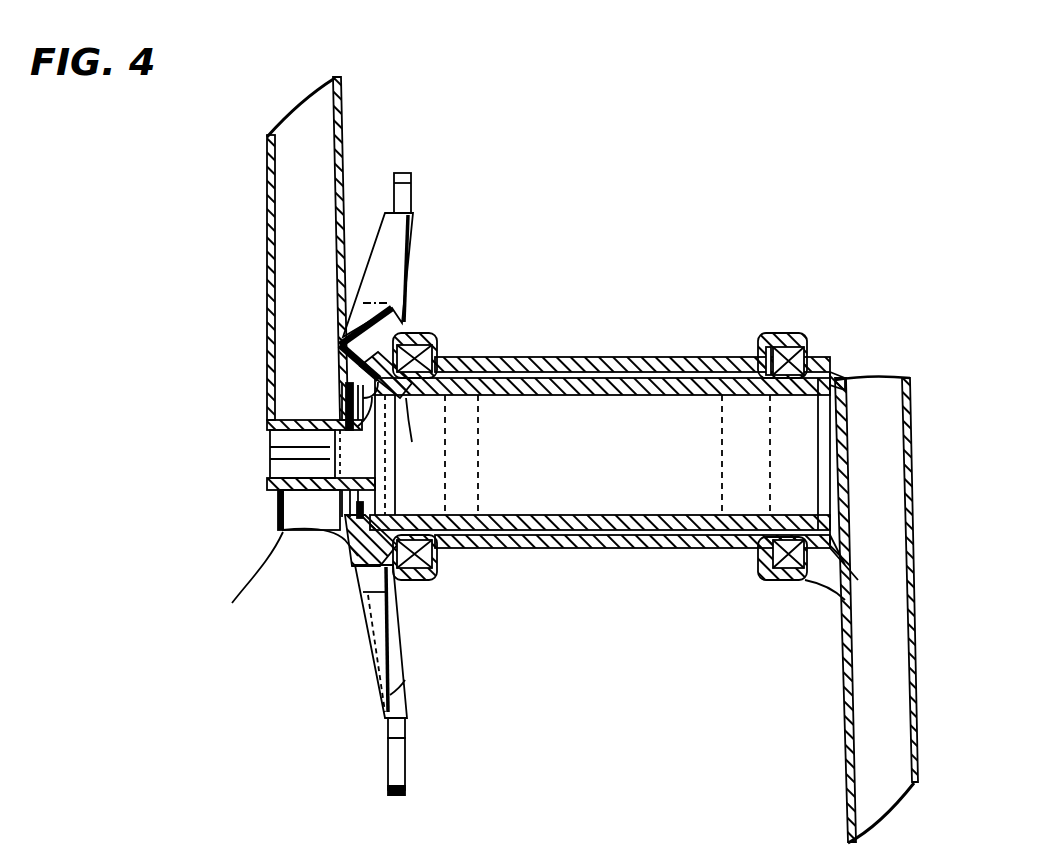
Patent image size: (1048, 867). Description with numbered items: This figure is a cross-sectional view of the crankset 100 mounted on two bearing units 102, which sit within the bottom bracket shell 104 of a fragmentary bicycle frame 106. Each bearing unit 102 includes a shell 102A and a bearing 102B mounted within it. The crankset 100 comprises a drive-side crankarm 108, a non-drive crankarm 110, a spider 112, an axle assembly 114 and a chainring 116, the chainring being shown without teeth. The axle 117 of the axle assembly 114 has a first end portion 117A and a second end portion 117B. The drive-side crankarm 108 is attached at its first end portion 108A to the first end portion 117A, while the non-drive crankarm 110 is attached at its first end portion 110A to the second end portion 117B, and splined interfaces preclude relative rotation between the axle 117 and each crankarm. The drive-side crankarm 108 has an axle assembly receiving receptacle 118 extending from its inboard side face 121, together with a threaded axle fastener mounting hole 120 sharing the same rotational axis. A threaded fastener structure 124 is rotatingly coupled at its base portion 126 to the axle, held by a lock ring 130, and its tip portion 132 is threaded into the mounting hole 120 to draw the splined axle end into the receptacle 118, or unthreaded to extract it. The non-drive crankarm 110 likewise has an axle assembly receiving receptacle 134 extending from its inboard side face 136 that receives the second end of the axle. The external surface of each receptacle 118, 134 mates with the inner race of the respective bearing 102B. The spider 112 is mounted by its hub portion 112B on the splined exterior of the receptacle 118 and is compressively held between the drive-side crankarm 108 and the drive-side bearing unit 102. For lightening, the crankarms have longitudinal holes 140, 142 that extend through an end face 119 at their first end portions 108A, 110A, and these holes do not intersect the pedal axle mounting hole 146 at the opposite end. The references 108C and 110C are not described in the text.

The crankset 100 is at (262, 521).
The bearing unit 102 is at (453, 333).
The shell 102A is at (770, 334).
The bearing 102B is at (808, 375).
The bottom bracket shell 104 is at (628, 358).
The bicycle frame 106 is at (568, 354).
The drive-side crankarm 108 is at (268, 254).
The first end portion of the drive-side crankarm 108A is at (313, 535).
The flange outer edge 108C is at (268, 152).
The non-drive crankarm 110 is at (912, 510).
The first end portion of the non-drive crankarm 110A is at (910, 418).
The second flange lower edge 110C is at (922, 770).
The spider 112 is at (368, 648).
The hub portion of the spider 112B is at (390, 327).
The axle assembly 114 is at (560, 513).
The chainring 116 is at (402, 795).
The axle 117 is at (615, 522).
The first end portion of the axle 117A is at (434, 560).
The second end portion of the axle 117B is at (790, 530).
The axle assembly receiving receptacle 118 is at (418, 455).
The end face 119 is at (903, 325).
The axle fastener mounting hole 120 is at (300, 418).
The inboard side face 121 is at (345, 182).
The threaded fastener structure 124 is at (335, 456).
The base portion 126 is at (345, 387).
The lock ring 130 is at (348, 398).
The tip portion 132 is at (270, 432).
The axle assembly receiving receptacle 134 is at (833, 378).
The inboard side face 136 is at (843, 720).
The longitudinal holes 140 is at (315, 124).
The longitudinal holes 142 is at (885, 723).
The pedal axle mounting hole 146 is at (472, 456).